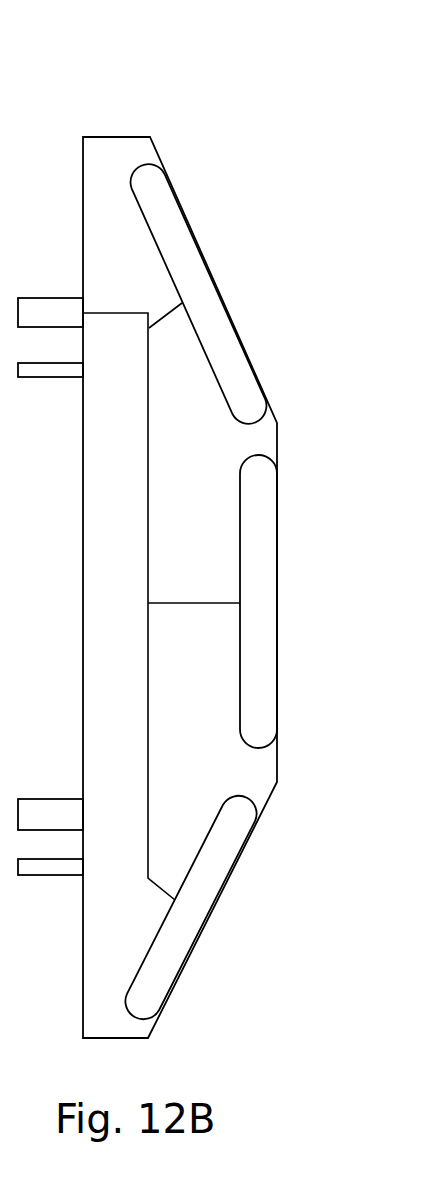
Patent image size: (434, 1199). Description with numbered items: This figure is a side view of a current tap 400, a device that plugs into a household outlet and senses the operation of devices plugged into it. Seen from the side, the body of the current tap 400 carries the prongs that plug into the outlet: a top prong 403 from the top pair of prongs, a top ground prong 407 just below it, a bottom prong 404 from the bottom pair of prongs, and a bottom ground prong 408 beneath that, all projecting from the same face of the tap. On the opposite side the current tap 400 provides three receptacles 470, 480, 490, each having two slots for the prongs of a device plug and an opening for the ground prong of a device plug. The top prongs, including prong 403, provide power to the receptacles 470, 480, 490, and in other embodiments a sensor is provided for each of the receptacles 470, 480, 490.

The current tap 400 is at (150, 110).
The top prong 403 is at (50, 297).
The bottom prong 404 is at (50, 799).
The top ground prong 407 is at (50, 384).
The bottom ground prong 408 is at (50, 880).
The receptacle 470 is at (199, 294).
The receptacle 480 is at (238, 601).
The receptacle 490 is at (190, 907).